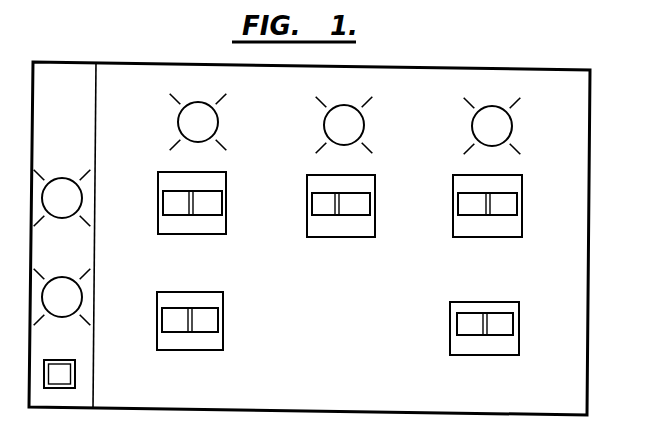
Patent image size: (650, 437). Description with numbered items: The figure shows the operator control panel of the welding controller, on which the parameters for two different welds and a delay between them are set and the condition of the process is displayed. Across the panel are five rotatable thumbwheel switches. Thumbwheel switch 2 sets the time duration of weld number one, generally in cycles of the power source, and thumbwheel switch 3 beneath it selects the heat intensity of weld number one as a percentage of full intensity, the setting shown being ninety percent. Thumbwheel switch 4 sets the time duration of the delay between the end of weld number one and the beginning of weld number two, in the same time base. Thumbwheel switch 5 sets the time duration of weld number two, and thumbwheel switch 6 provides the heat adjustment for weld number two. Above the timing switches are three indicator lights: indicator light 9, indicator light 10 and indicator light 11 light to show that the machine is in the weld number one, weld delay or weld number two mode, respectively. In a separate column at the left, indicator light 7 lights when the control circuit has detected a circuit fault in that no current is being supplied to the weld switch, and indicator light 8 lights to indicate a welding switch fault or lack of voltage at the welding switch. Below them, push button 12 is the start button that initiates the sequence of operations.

The thumbwheel switch 2 is at (222, 221).
The thumbwheel switch 3 is at (210, 306).
The thumbwheel switch 4 is at (364, 222).
The thumbwheel switch 5 is at (510, 222).
The thumbwheel switch 6 is at (505, 342).
The indicator light 7 is at (74, 201).
The indicator light 8 is at (74, 300).
The indicator light 9 is at (184, 121).
The indicator light 10 is at (330, 124).
The indicator light 11 is at (478, 126).
The push button 12 is at (72, 376).